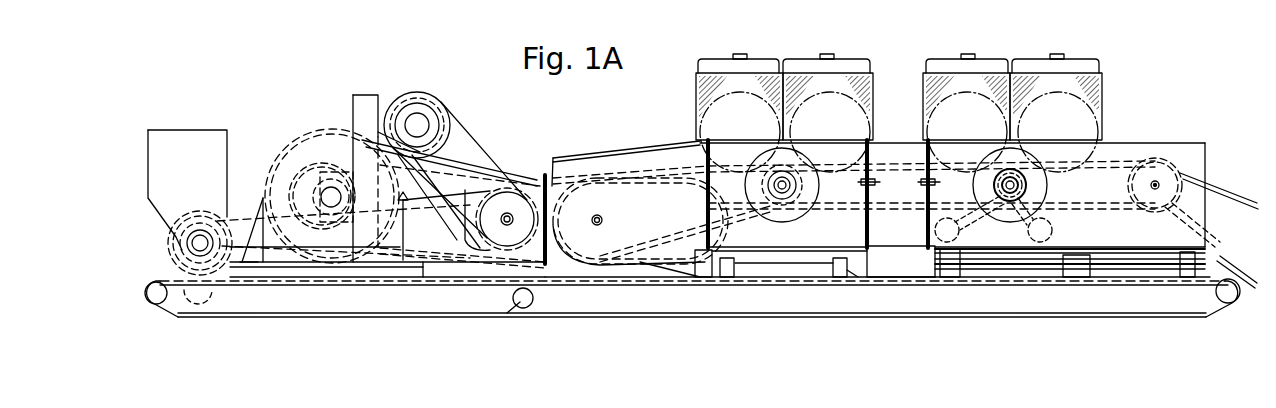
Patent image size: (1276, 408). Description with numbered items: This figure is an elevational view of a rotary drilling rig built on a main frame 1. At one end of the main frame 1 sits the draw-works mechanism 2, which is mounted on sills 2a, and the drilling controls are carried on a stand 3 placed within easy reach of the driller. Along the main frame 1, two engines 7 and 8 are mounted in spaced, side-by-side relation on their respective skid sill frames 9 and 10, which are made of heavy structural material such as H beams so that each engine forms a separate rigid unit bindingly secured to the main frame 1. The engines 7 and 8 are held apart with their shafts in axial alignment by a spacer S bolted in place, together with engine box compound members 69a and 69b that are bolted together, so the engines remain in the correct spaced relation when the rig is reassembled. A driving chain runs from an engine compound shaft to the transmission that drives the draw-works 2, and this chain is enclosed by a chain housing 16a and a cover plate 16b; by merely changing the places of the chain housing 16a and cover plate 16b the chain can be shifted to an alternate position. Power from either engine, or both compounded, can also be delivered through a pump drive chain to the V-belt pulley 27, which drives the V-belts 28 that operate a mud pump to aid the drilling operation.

The main frame 1 is at (978, 305).
The draw-works mechanism 2 is at (352, 110).
The sills 2a is at (562, 273).
The stand 3 is at (227, 141).
The engine 7 is at (783, 74).
The engine 8 is at (1013, 74).
The skid sill frame 9 is at (858, 270).
The skid sill frame 10 is at (934, 268).
The chain housing 16a is at (648, 157).
The cover plate 16b is at (705, 152).
The V-belt pulley 27 is at (1170, 195).
The V-belts 28 is at (1252, 192).
The engine box compound member 69a is at (783, 238).
The engine box compound member 69b is at (1113, 146).
The spacer S is at (890, 147).